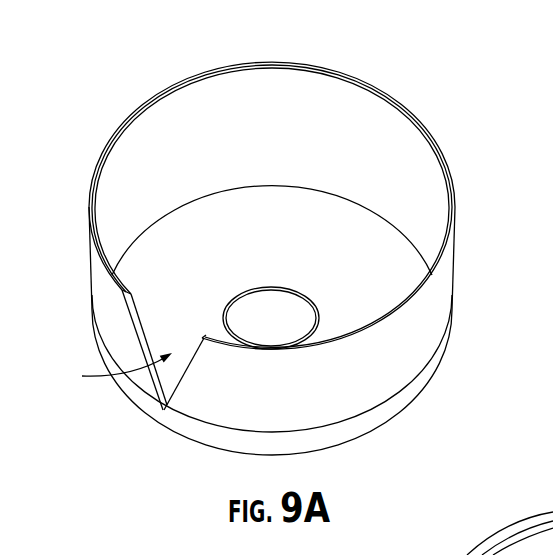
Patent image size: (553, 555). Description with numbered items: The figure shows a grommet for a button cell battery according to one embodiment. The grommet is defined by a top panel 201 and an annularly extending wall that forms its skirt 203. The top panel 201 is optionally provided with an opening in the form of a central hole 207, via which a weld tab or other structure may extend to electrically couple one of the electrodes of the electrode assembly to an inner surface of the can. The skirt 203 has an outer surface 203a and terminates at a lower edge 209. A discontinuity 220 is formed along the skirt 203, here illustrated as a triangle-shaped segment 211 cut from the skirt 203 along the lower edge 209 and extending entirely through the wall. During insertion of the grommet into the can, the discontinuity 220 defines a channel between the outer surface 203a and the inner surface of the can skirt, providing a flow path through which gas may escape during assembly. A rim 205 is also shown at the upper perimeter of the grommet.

The top panel 201 is at (249, 242).
The skirt 203 is at (188, 441).
The outer surface 203a is at (383, 388).
The rim 205 is at (156, 97).
The central hole 207 is at (280, 287).
The lower edge 209 is at (418, 88).
The triangle-shaped segment 211 is at (133, 315).
The discontinuities 220 is at (108, 371).